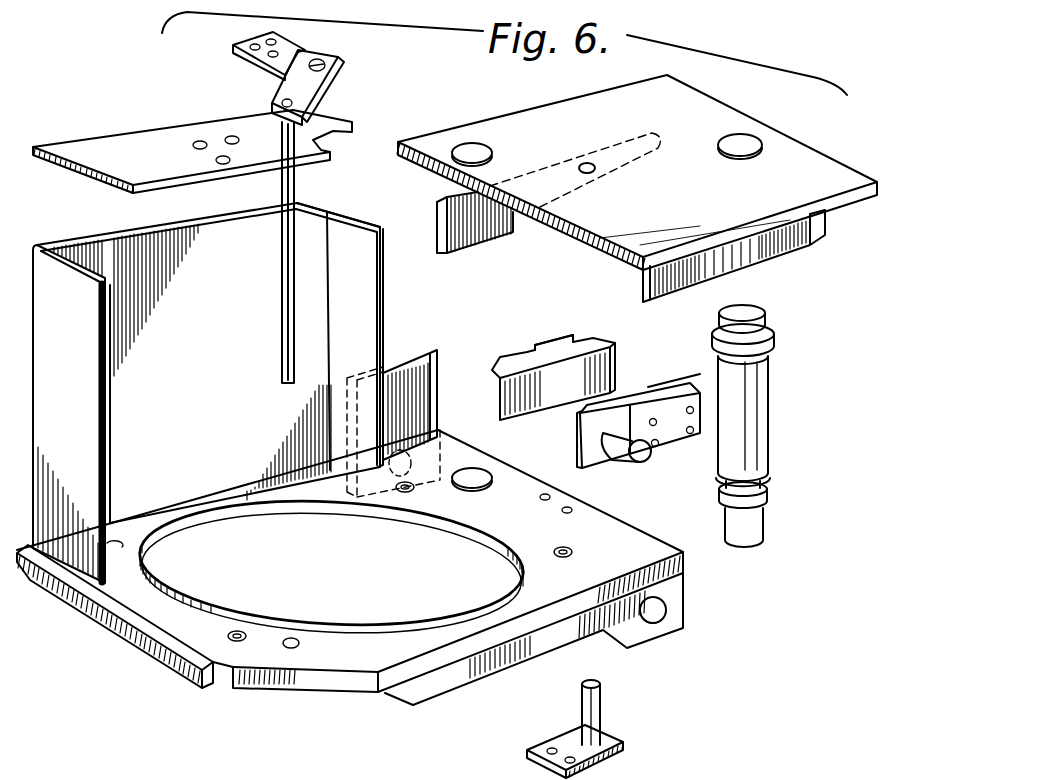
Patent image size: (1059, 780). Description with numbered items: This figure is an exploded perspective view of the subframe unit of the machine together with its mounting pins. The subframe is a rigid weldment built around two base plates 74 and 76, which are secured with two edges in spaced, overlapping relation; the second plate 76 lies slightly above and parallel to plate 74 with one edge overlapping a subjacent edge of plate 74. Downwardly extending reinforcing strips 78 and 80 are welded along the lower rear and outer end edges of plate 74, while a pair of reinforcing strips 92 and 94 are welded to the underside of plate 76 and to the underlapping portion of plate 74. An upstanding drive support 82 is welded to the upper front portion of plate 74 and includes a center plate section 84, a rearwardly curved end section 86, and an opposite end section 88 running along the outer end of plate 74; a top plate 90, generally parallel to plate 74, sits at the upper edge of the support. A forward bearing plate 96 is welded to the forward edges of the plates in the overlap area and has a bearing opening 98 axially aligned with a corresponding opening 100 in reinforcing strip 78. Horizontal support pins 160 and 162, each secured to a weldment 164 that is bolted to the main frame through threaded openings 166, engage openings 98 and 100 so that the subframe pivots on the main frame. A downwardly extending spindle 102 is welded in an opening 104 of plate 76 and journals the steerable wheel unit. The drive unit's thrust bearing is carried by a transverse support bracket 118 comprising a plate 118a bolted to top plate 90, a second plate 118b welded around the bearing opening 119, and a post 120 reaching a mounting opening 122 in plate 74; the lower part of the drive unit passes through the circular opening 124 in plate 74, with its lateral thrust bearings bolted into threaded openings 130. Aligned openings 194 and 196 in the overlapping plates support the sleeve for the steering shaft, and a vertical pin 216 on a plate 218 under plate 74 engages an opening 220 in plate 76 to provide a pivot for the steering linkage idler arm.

The base plate 74 is at (348, 680).
The base plate 76 is at (845, 177).
The reinforcing strip 78 is at (455, 677).
The reinforcing strip 80 is at (157, 667).
The drive support 82 is at (213, 374).
The center plate section 84 is at (232, 277).
The rearwardly curved end section 86 is at (358, 212).
The end section 88 is at (78, 385).
The top plate 90 is at (143, 148).
The reinforcing strip 92 is at (783, 253).
The reinforcing strip 94 is at (490, 233).
The forward bearing plate 96 is at (403, 353).
The bearing opening 98 is at (405, 455).
The opening 100 is at (670, 614).
The spindle 102 is at (766, 416).
The opening 104 is at (752, 143).
The transverse support bracket 118 is at (305, 75).
The plate 118a is at (258, 58).
The second plate 118b is at (333, 90).
The bearing opening 119 is at (322, 60).
The post 120 is at (282, 183).
The mounting opening 122 is at (293, 636).
The circular opening 124 is at (214, 528).
The threaded openings 130 is at (402, 490).
The support pin 160 is at (498, 358).
The support pin 162 is at (643, 462).
The weldment 164 is at (570, 347).
The threaded openings 166 is at (689, 435).
The opening 194 is at (478, 472).
The opening 196 is at (467, 142).
The vertical pin 216 is at (607, 700).
The plate 218 is at (613, 738).
The opening 220 is at (593, 173).